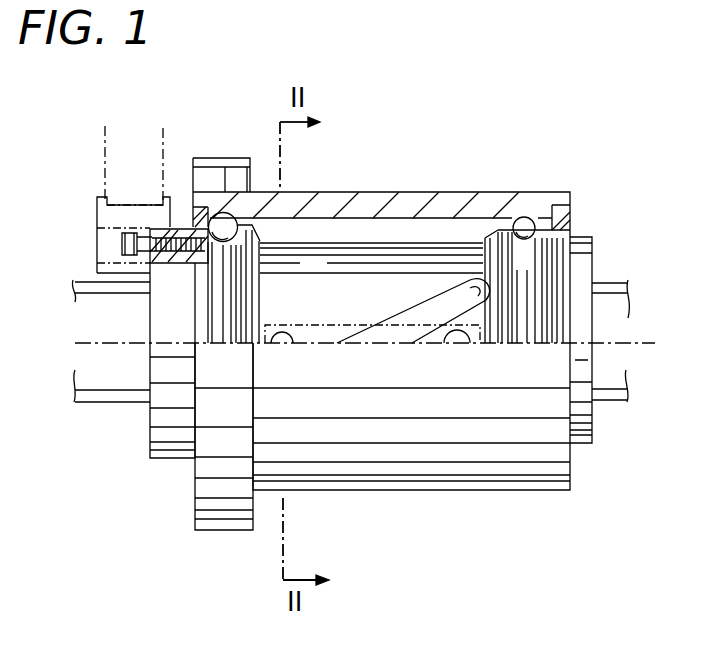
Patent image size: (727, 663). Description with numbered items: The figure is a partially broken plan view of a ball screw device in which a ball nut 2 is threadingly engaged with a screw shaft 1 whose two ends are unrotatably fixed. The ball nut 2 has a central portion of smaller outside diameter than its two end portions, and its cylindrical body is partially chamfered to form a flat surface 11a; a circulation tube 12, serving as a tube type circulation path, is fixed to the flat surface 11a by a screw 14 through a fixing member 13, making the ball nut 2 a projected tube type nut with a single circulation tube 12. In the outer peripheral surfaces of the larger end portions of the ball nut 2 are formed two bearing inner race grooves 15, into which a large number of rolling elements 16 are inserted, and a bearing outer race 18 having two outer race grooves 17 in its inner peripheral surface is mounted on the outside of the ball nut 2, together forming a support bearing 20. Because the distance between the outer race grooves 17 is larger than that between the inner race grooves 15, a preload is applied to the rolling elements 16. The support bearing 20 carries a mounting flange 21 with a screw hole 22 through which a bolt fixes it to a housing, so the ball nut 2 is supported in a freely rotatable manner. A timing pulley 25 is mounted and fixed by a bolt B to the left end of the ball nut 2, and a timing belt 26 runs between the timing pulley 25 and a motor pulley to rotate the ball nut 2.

The screw shaft 1 is at (632, 300).
The ball nut 2 is at (440, 253).
The flat surface 11a is at (380, 287).
The circulation tube 12 is at (480, 293).
The fixing member 13 is at (440, 343).
The screw 14 is at (288, 330).
The bearing inner race groove 15 is at (222, 313).
The rolling element 16 is at (529, 223).
The outer race groove 17 is at (515, 218).
The bearing outer race 18 is at (313, 203).
The support bearing 20 is at (367, 160).
The mounting flange 21 is at (235, 157).
The screw hole 22 is at (186, 170).
The timing pulley 25 is at (105, 215).
The timing belt 26 is at (117, 150).
The bolt B is at (145, 240).